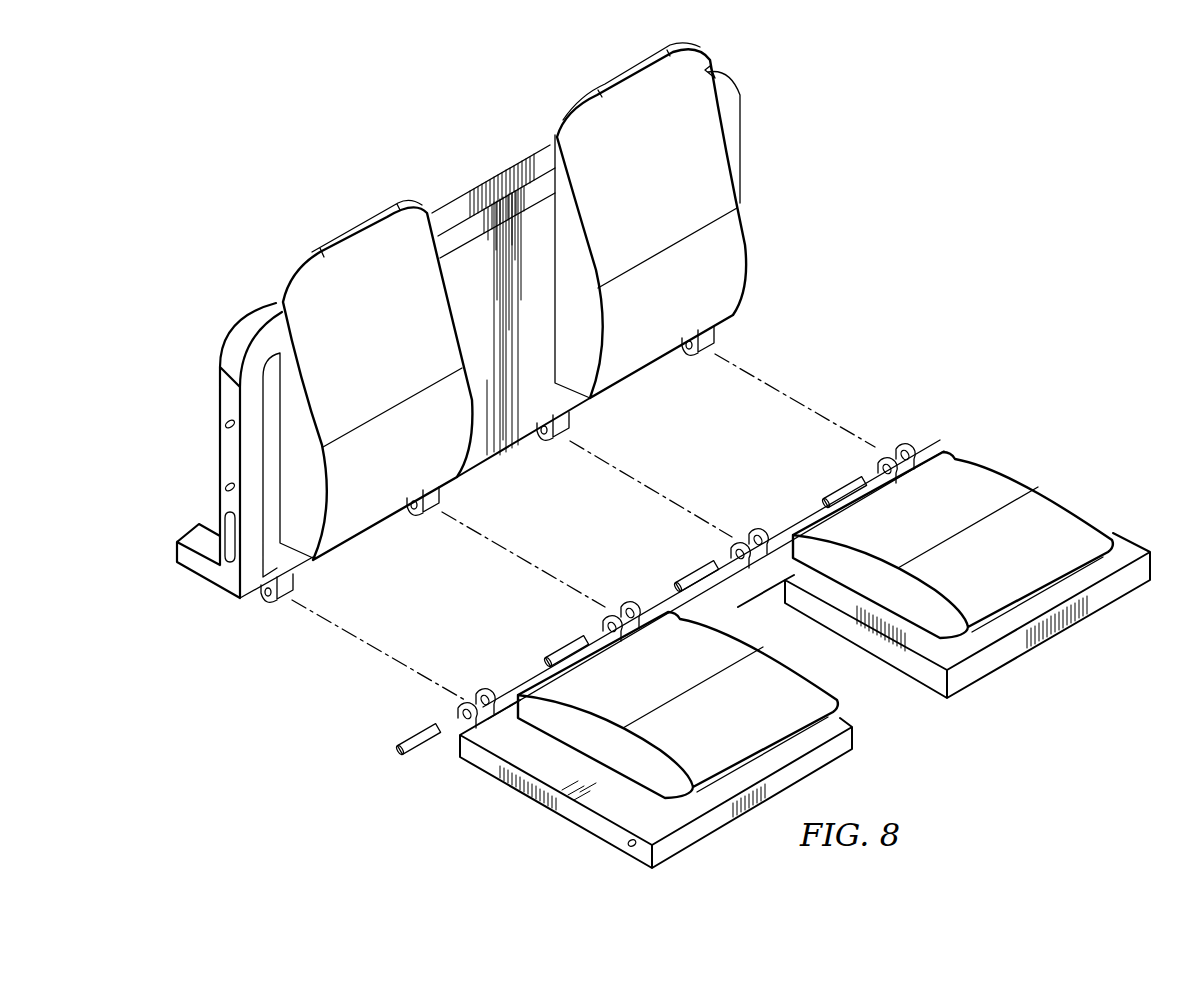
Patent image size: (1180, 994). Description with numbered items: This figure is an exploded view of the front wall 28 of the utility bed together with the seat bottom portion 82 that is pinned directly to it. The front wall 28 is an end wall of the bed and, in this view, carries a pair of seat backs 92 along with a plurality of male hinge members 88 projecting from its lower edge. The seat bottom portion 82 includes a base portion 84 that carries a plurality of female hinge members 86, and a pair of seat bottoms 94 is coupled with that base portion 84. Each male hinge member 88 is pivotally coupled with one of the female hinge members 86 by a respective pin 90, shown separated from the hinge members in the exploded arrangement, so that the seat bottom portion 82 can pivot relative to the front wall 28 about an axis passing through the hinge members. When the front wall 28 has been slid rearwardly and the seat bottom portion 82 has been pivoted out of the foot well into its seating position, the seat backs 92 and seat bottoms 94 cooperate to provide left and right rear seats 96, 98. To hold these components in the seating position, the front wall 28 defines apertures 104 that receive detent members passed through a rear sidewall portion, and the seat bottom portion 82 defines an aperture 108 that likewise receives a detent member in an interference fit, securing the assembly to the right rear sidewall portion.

The front wall 28 is at (505, 162).
The seat bottom portion 82 is at (809, 684).
The base portion 84 is at (1130, 548).
The female hinge member 86 is at (888, 436).
The male hinge member 88 is at (698, 373).
The pin 90 is at (838, 486).
The seat back 92 is at (362, 258).
The seat bottom 94 is at (1057, 517).
The left rear seat 96 is at (768, 252).
The right rear seat 98 is at (466, 326).
The aperture 104 is at (227, 426).
The aperture 108 is at (620, 843).